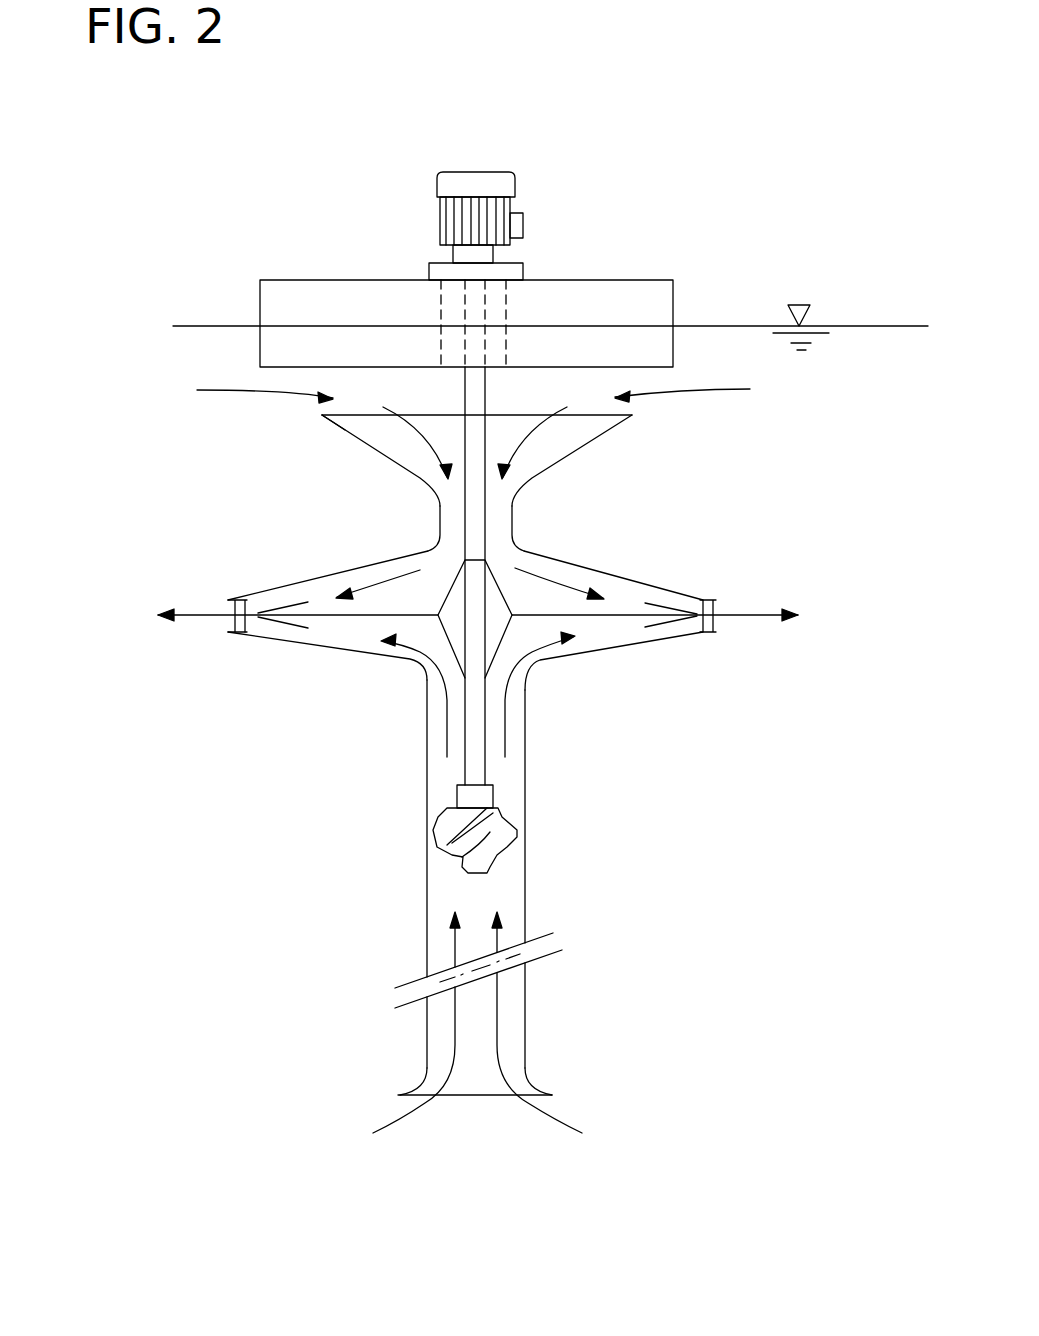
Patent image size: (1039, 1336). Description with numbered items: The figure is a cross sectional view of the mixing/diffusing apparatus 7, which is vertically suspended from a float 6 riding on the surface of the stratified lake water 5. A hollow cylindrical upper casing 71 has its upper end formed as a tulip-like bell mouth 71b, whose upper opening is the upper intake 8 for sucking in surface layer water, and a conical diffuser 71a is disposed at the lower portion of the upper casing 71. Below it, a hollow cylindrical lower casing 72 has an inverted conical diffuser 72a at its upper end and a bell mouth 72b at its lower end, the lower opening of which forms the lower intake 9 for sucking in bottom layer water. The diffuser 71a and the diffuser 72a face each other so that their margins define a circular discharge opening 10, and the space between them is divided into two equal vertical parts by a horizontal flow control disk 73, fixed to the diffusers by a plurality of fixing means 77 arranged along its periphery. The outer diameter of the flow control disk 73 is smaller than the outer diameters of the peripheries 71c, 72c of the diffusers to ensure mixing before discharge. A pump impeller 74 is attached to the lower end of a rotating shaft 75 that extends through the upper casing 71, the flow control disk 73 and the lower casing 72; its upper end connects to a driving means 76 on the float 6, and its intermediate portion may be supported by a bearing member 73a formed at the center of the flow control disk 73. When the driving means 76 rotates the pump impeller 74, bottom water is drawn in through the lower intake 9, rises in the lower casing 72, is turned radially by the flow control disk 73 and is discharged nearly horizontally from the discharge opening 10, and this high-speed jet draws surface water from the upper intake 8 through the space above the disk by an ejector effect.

The stratified lake water 5 is at (860, 345).
The float 6 is at (608, 295).
The mixing/diffusing apparatus 7 is at (746, 532).
The upper intake 8 is at (557, 422).
The lower intake 9 is at (480, 1095).
The discharge opening 10 is at (717, 607).
The upper casing 71 is at (438, 518).
The conical diffuser 71a is at (332, 573).
The bell mouth 71b is at (338, 422).
The periphery 71c is at (227, 600).
The lower casing 72 is at (427, 783).
The inverted conical diffuser 72a is at (343, 658).
The bell mouth 72b is at (418, 1083).
The periphery 72c is at (228, 636).
The flow control disk 73 is at (610, 617).
The bearing member 73a is at (545, 655).
The pump impeller 74 is at (440, 835).
The rotating shaft 75 is at (477, 513).
The driving means 76 is at (483, 180).
The fixing means 77 is at (243, 636).